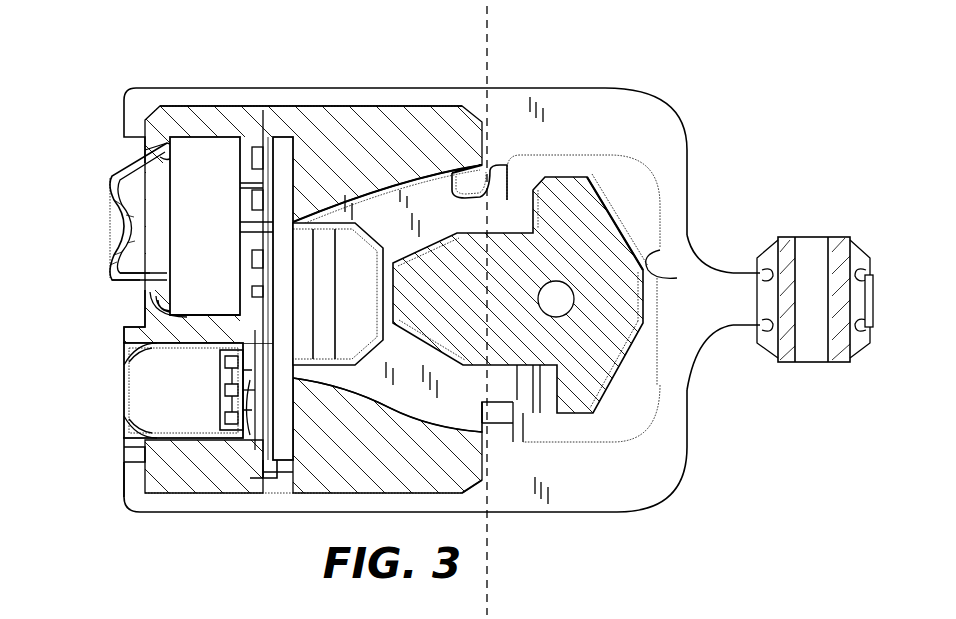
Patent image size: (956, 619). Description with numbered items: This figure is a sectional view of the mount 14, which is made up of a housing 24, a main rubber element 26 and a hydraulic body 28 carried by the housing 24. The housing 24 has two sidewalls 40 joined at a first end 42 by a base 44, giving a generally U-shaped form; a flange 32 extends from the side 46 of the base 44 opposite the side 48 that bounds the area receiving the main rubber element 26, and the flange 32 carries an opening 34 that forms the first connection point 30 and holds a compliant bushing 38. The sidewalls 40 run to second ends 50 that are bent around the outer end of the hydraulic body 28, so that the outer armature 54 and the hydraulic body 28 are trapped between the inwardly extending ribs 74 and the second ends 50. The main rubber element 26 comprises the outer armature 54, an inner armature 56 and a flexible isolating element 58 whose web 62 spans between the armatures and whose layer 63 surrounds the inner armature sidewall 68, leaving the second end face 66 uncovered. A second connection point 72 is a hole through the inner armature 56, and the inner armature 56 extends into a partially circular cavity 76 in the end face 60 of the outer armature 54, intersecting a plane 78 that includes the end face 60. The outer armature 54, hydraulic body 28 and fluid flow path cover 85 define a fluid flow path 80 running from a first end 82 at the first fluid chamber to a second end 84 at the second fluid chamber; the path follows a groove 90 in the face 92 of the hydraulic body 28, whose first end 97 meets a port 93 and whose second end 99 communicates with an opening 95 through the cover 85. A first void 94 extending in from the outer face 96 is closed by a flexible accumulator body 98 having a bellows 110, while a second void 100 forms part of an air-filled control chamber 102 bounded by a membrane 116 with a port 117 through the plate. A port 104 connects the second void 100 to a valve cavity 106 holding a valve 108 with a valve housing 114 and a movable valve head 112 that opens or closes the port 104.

The mount 14 is at (732, 78).
The housing 24 is at (616, 86).
The main rubber element 26 is at (633, 213).
The hydraulic body 28 is at (207, 122).
The first connection point 30 is at (823, 220).
The flange 32 is at (734, 312).
The opening 34 is at (823, 350).
The bushing 38 is at (840, 250).
The sidewalls 40 is at (418, 90).
The first end 42 is at (656, 112).
The base 44 is at (667, 393).
The side 46 is at (688, 212).
The side 48 is at (648, 255).
The second end 50 is at (128, 107).
The outer armature 54 is at (348, 100).
The inner armature 56 is at (605, 190).
The isolating element 58 is at (478, 186).
The end face 60 is at (368, 396).
The web 62 is at (410, 395).
The layer 63 is at (523, 367).
The second end face 66 is at (433, 311).
The sidewall 68 is at (540, 365).
The second connection point 72 is at (552, 304).
The ribs 74 is at (509, 176).
The cavity 76 is at (428, 190).
The plane 78 is at (489, 15).
The fluid flow path 80 is at (288, 132).
The first end 82 is at (275, 232).
The second end 84 is at (187, 130).
The fluid flow path cover 85 is at (255, 265).
The groove 90 is at (252, 156).
The face 92 is at (288, 467).
The port 93 is at (250, 188).
The first void 94 is at (147, 297).
The opening 95 is at (305, 283).
The outer face 96 is at (145, 150).
The first end 97 is at (264, 196).
The accumulator body 98 is at (118, 200).
The second end 99 is at (262, 291).
The second void 100 is at (255, 416).
The control chamber 102 is at (223, 413).
The port 104 is at (247, 390).
The valve cavity 106 is at (150, 358).
The valve 108 is at (120, 400).
The bellows 110 is at (112, 280).
The valve head 112 is at (229, 386).
The housing 114 is at (160, 422).
The membrane 116 is at (262, 412).
The port 117 is at (260, 438).